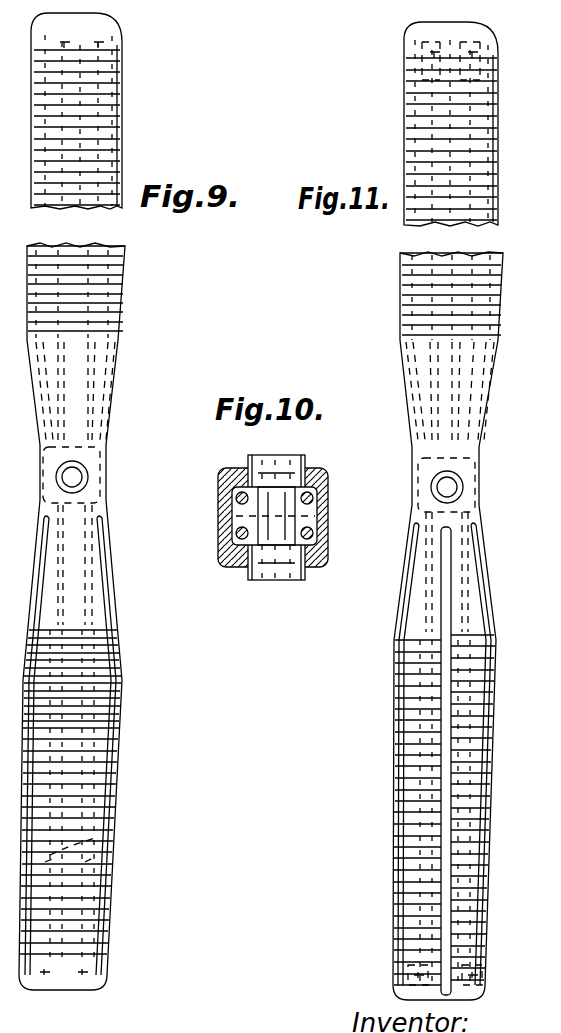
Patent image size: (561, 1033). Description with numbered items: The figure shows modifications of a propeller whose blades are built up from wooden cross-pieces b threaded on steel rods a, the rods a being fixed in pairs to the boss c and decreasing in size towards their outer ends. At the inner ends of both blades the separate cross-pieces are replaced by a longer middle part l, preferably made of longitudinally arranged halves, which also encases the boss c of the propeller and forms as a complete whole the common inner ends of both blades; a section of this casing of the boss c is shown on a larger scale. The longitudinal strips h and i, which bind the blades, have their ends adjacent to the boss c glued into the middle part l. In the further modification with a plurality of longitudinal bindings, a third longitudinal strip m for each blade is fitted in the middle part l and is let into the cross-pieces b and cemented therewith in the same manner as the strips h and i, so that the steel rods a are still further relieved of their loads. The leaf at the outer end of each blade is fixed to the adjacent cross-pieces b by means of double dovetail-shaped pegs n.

In FIG. 9, the steel rod a is at (95, 838).
In FIG. 10, the steel rod a is at (236, 498).
In FIG. 9, the cross-piece b is at (27, 250).
In FIG. 11, the cross-piece b is at (499, 212).
In FIG. 9, the boss c is at (80, 487).
In FIG. 10, the boss c is at (270, 578).
In FIG. 11, the boss c is at (446, 485).
In FIG. 9, the longitudinal strip h is at (40, 583).
In FIG. 11, the longitudinal strip h is at (400, 786).
In FIG. 9, the longitudinal strip i is at (110, 588).
In FIG. 11, the longitudinal strip i is at (480, 795).
In FIG. 9, the middle part l is at (72, 418).
In FIG. 10, the middle part l is at (232, 515).
In FIG. 11, the middle part l is at (468, 408).
In FIG. 11, the third longitudinal strip m is at (436, 992).
In FIG. 11, the double dovetail-shaped peg n is at (480, 982).